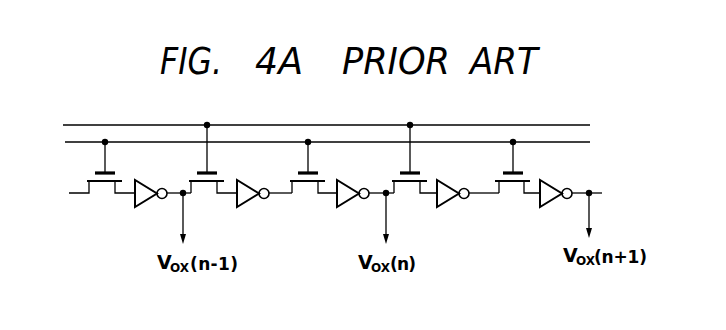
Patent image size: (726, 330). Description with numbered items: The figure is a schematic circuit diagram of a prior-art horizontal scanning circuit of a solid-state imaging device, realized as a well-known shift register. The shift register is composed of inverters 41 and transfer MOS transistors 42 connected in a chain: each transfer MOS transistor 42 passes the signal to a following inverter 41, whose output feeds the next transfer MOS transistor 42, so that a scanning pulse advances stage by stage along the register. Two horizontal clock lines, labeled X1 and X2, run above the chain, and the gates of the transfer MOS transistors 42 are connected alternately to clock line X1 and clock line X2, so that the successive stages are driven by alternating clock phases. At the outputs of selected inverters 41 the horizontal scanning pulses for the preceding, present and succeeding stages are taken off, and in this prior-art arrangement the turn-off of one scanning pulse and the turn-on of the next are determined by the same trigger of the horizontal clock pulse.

The inverter 41 is at (146, 205).
The transfer MOS transistor 42 is at (102, 185).
The clock line φ X1 is at (37, 113).
The clock line φ X2 is at (66, 142).